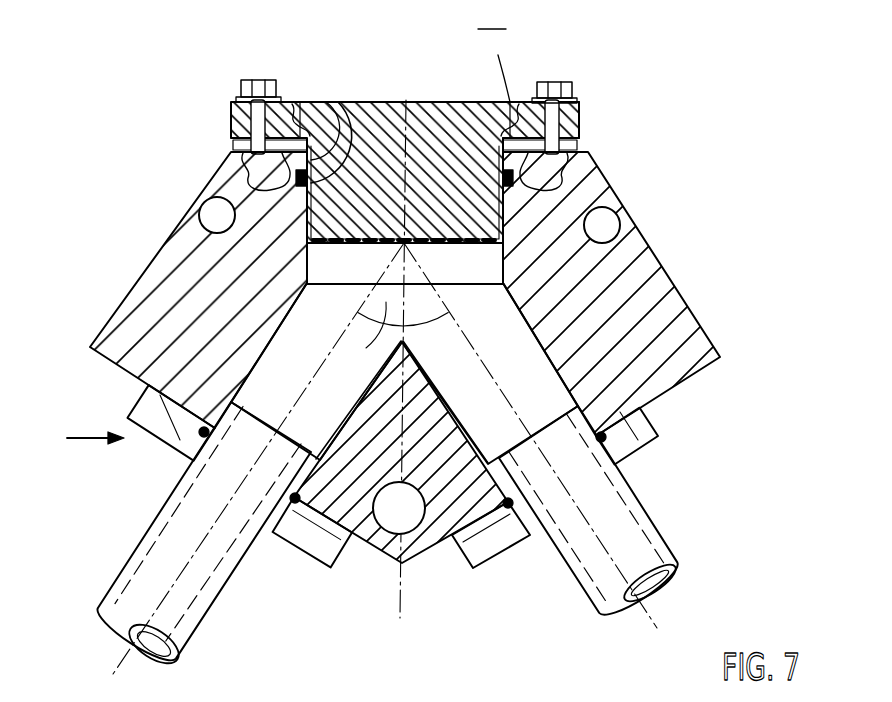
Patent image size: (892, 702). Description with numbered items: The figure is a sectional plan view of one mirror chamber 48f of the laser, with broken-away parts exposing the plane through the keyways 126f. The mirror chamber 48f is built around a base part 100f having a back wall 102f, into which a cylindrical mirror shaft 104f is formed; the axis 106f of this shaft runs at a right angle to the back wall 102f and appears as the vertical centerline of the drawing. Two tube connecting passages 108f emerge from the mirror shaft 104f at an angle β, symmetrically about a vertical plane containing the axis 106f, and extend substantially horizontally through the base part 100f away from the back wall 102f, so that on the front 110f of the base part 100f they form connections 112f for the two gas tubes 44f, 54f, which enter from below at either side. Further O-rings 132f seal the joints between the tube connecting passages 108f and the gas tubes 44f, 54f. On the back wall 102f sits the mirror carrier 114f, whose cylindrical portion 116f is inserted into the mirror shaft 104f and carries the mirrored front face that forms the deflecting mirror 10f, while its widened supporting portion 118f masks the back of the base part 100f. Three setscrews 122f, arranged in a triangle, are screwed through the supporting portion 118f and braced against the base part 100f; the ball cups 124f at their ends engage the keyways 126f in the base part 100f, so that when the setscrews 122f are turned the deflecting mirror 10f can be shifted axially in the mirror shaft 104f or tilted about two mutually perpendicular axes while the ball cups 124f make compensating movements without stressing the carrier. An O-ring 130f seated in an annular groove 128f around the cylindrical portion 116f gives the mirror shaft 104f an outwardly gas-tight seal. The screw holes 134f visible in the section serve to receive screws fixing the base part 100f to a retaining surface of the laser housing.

The deflecting mirror 10f is at (383, 349).
The gas tube 44f is at (147, 533).
The mirror chamber 48f is at (76, 440).
The gas tube 54f is at (620, 520).
The base part 100f is at (637, 240).
The back wall 102f is at (587, 117).
The mirror shaft 104f is at (298, 258).
The axis 106f is at (410, 102).
The tube connecting passages 108f is at (265, 348).
The front 110f is at (372, 547).
The connections 112f is at (148, 388).
The mirror carrier 114f is at (392, 102).
The cylindrical portion 116f is at (233, 197).
The supporting portion 118f is at (250, 118).
The setscrews 122f is at (245, 80).
The ball cups 124f is at (233, 137).
The keyways 126f is at (238, 148).
The annular groove 128f is at (335, 125).
The O-ring 130f is at (304, 124).
The O-rings 132f is at (295, 503).
The screw holes 134f is at (215, 215).